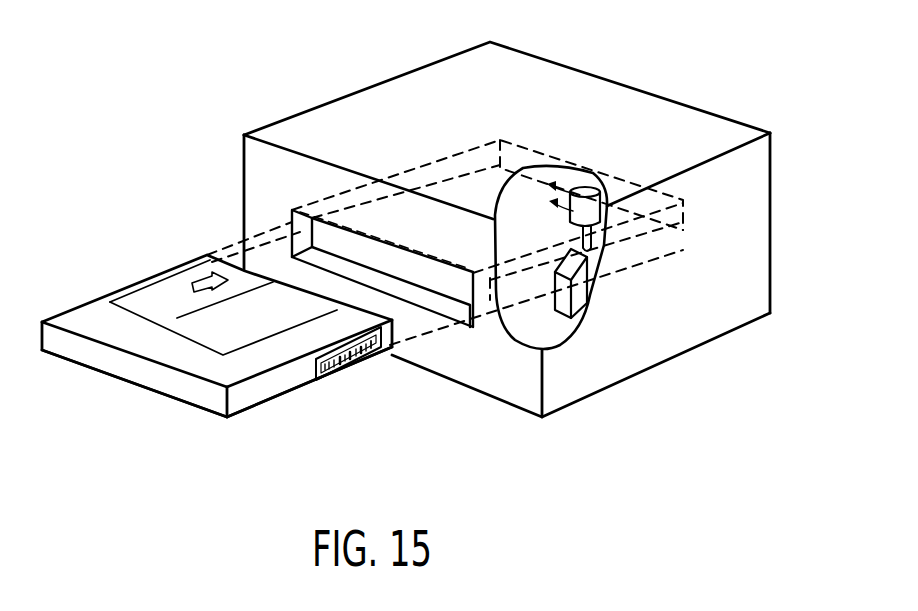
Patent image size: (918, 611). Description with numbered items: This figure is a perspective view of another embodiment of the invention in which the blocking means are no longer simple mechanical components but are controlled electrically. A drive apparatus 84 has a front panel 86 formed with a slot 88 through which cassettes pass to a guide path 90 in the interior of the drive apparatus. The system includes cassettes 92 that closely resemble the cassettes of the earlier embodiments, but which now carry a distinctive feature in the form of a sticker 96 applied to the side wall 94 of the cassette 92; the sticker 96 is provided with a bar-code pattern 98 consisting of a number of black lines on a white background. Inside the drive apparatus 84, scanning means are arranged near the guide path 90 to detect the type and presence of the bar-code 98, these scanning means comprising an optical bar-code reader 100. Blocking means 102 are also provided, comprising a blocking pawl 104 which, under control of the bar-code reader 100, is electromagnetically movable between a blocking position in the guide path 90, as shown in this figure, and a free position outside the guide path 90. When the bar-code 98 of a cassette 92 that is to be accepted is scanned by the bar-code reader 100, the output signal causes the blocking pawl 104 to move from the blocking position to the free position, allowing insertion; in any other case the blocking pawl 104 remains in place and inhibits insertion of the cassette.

The drive apparatus 84 is at (555, 86).
The front panel 86 is at (487, 376).
The slot 88 is at (325, 217).
The guide path 90 is at (683, 252).
The cassette 92 is at (90, 310).
The side wall 94 is at (255, 398).
The sticker 96 is at (334, 372).
The bar-code pattern 98 is at (352, 357).
The optical bar-code reader 100 is at (578, 290).
The blocking means 102 is at (590, 205).
The blocking pawl 104 is at (595, 240).